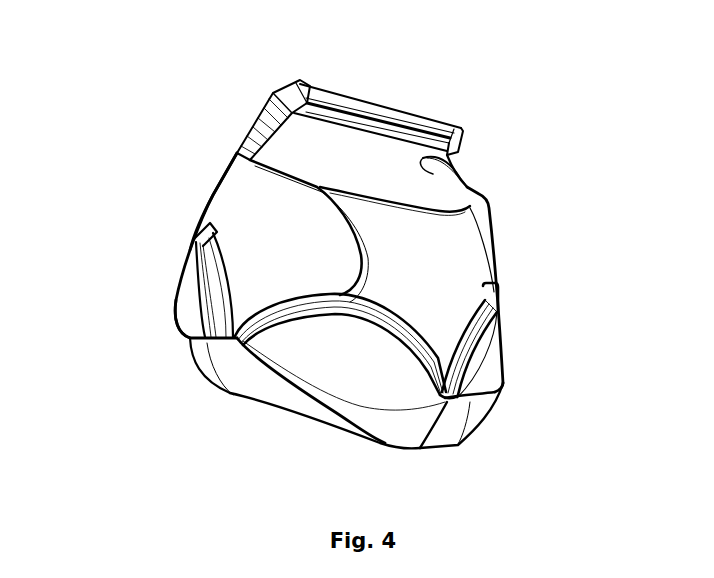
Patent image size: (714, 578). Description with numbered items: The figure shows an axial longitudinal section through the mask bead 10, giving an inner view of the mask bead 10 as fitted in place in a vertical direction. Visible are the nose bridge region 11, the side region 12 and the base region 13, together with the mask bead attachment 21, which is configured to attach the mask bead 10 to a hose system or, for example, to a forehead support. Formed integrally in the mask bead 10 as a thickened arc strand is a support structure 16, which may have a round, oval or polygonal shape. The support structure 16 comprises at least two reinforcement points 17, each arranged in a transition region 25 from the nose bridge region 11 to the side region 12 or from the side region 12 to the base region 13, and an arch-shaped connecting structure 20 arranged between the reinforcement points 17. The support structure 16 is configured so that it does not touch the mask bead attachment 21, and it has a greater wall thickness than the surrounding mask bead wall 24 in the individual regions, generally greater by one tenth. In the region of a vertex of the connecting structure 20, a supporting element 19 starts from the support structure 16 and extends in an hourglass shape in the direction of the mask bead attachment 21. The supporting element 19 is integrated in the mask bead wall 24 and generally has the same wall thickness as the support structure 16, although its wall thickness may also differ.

The mask bead 10 is at (162, 212).
The nose bridge region 11 is at (166, 345).
The side region 12 is at (311, 432).
The base region 13 is at (506, 410).
The support structure 16 is at (188, 266).
The reinforcement points 17 is at (177, 327).
The supporting element 19 is at (397, 220).
The connecting structure 20 is at (407, 323).
The mask bead attachment 21 is at (260, 120).
The mask bead wall 24 is at (213, 187).
The transition region 25 is at (200, 387).